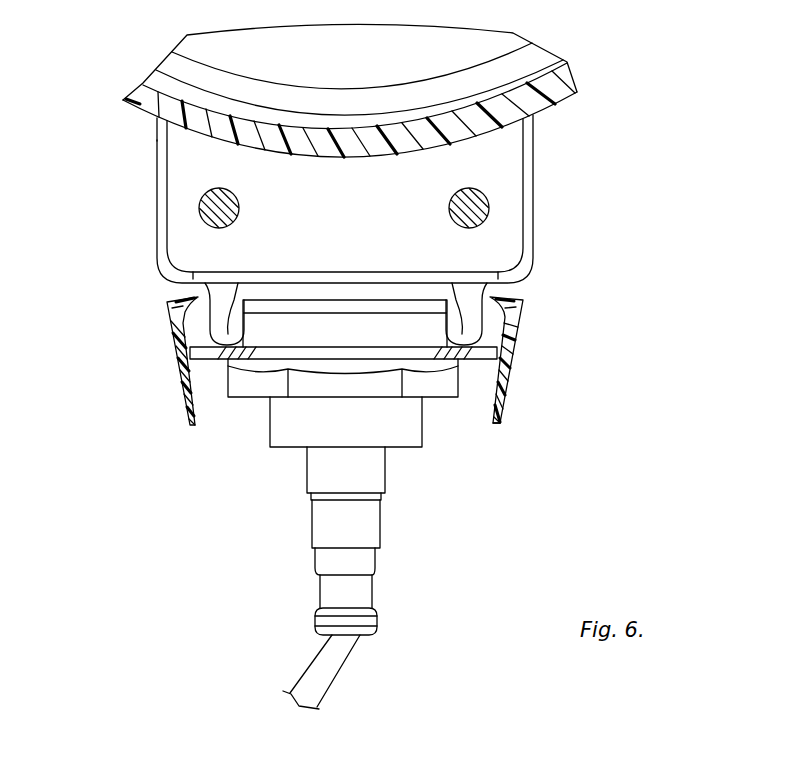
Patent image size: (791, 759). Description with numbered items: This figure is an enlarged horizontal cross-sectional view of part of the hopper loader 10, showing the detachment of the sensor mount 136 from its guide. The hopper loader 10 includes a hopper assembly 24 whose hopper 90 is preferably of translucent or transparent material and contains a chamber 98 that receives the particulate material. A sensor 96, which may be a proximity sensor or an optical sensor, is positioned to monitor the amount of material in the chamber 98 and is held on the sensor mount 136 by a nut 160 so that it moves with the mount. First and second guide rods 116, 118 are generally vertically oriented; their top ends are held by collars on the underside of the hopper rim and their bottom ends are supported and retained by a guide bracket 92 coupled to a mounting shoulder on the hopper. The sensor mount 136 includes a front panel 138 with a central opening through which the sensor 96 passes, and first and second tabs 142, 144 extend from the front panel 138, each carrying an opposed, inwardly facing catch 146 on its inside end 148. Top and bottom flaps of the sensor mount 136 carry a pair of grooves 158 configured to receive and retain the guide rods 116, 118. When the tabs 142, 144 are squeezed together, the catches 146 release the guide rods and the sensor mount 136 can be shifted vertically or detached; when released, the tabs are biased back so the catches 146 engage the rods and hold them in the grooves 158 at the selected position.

The hopper loader 10 is at (154, 501).
The hopper assembly 24 is at (571, 99).
The hopper 90 is at (142, 103).
The guide bracket 92 is at (527, 172).
The sensor 96 is at (270, 442).
The chamber 98 is at (336, 54).
The first guide rod 116 is at (201, 209).
The second guide rod 118 is at (482, 211).
The sensor mount 136 is at (506, 378).
The front panel 138 is at (460, 350).
The first tab 142 is at (169, 330).
The second tab 144 is at (517, 338).
The catches 146 is at (176, 297).
The inside ends 148 is at (498, 300).
The grooves 158 is at (224, 300).
The nut 160 is at (242, 388).